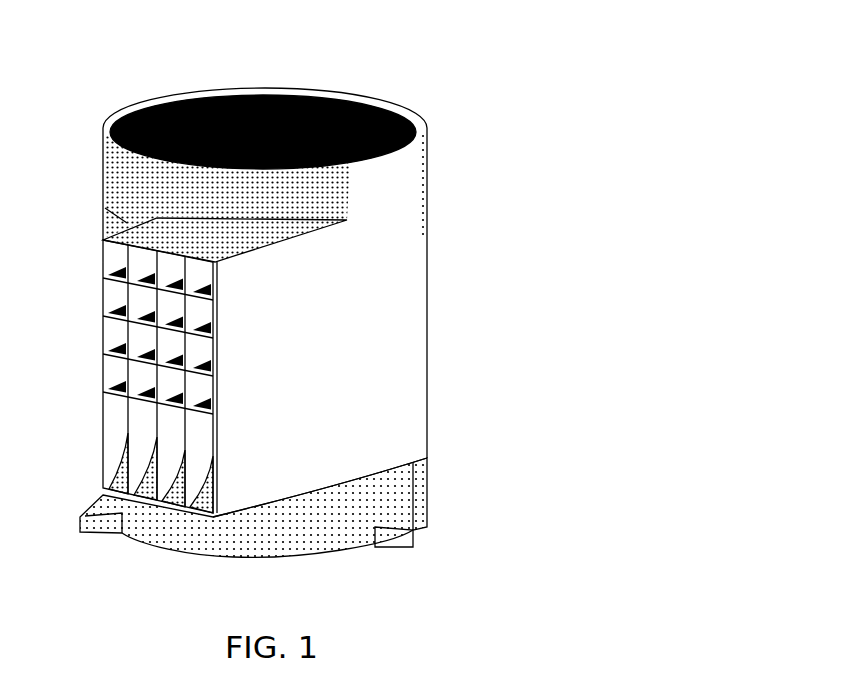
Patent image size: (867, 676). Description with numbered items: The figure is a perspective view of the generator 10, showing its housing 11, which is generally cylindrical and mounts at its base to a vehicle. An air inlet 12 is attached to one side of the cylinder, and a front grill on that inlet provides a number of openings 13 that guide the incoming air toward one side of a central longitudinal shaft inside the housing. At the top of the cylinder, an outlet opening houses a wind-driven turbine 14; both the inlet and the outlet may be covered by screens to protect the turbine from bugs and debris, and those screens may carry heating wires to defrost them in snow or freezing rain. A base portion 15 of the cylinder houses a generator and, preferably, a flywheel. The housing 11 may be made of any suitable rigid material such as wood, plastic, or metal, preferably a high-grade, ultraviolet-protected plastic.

The generator 10 is at (516, 94).
The housing 11 is at (426, 221).
The air inlet 12 is at (104, 208).
The openings 13 is at (142, 302).
The wind-driven turbine 14 is at (372, 102).
The base portion 15 is at (432, 480).